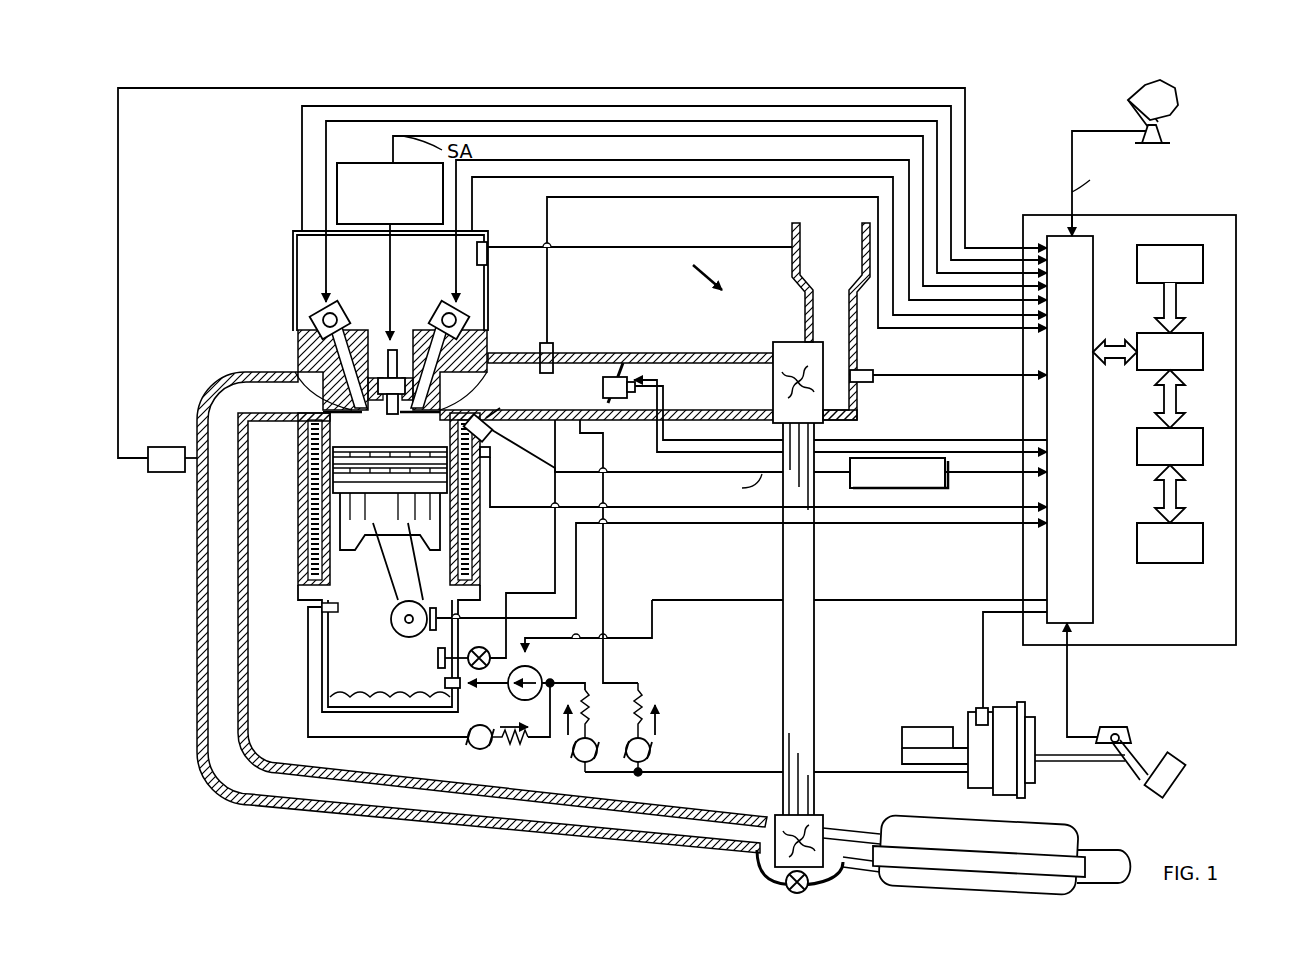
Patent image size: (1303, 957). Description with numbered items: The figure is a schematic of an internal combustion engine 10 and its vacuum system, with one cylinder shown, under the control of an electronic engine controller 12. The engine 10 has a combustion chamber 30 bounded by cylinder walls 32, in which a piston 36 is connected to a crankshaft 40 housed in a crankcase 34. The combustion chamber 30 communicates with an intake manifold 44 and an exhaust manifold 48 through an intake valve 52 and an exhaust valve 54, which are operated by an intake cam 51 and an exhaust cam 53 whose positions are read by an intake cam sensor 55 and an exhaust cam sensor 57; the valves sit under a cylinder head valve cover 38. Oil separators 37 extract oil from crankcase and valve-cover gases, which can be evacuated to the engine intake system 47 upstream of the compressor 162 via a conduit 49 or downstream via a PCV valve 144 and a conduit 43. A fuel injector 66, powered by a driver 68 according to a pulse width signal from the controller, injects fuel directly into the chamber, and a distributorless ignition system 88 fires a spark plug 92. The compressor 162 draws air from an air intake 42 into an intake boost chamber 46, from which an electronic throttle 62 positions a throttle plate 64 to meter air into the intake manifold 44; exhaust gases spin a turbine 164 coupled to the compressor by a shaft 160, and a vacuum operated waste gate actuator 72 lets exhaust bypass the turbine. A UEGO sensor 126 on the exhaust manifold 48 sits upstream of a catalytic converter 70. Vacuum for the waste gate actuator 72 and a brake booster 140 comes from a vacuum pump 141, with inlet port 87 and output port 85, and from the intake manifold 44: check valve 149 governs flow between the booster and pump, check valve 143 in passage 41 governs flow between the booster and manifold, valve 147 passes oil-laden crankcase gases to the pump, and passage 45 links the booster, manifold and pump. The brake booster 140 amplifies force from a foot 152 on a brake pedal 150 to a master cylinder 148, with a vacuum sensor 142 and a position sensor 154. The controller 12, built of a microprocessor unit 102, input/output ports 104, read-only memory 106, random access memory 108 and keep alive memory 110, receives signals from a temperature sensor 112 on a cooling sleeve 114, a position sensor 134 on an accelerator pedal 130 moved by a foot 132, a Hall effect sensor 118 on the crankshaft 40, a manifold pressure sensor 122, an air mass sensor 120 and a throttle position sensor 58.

The internal combustion engine 10 is at (236, 292).
The electronic engine controller 12 is at (1226, 215).
The combustion chamber 30 is at (392, 430).
The cylinder walls 32 is at (340, 550).
The crankcase 34 is at (408, 561).
The piston 36 is at (378, 580).
The oil separators 37 is at (487, 258).
The cylinder head valve cover 38 is at (490, 232).
The crankshaft 40 is at (390, 630).
The passage 41 is at (605, 597).
The air intake 42 is at (831, 321).
The conduit 43 is at (555, 560).
The intake manifold 44 is at (606, 386).
The passage 45 is at (680, 772).
The intake boost chamber 46 is at (773, 399).
The engine intake system 47 is at (688, 276).
The exhaust manifold 48 is at (482, 612).
The conduit 49 is at (717, 247).
The intake cam 51 is at (445, 305).
The intake valve 52 is at (440, 400).
The exhaust cam 53 is at (335, 305).
The exhaust valve 54 is at (300, 372).
The intake cam sensor 55 is at (462, 328).
The exhaust cam sensor 57 is at (318, 327).
The throttle position sensor 58 is at (648, 365).
The electronic throttle 62 is at (606, 398).
The throttle plate 64 is at (618, 375).
The fuel injector 66 is at (495, 440).
The driver 68 is at (945, 482).
The catalytic converter 70 is at (880, 882).
The vacuum operated waste gate actuator 72 is at (786, 888).
The output port 85 is at (508, 690).
The inlet port 87 is at (551, 679).
The distributorless ignition system 88 is at (344, 163).
The spark plug 92 is at (396, 360).
The microprocessor unit 102 is at (1203, 349).
The input/output ports 104 is at (1093, 243).
The read-only memory 106 is at (1203, 262).
The random access memory 108 is at (1203, 446).
The keep alive memory 110 is at (1203, 544).
The temperature sensor 112 is at (490, 507).
The cooling sleeve 114 is at (480, 550).
The Hall effect sensor 118 is at (438, 645).
The air mass sensor 120 is at (873, 370).
The pressure sensor 122 is at (553, 345).
The UEGO sensor 126 is at (160, 472).
The accelerator pedal 130 is at (1132, 108).
The foot 132 is at (1178, 100).
The position sensor 134 is at (1165, 138).
The brake booster 140 is at (1010, 707).
The vacuum pump 141 is at (530, 658).
The vacuum sensor 142 is at (978, 708).
The check valve 143 is at (628, 735).
The PCV valve 144 is at (479, 647).
The valve 147 is at (468, 745).
The master cylinder 148 is at (938, 727).
The check valve 149 is at (575, 760).
The brake pedal 150 is at (1140, 790).
The foot 152 is at (1172, 760).
The position sensor 154 is at (1103, 733).
The shaft 160 is at (818, 650).
The compressor 162 is at (780, 342).
The turbine 164 is at (818, 815).